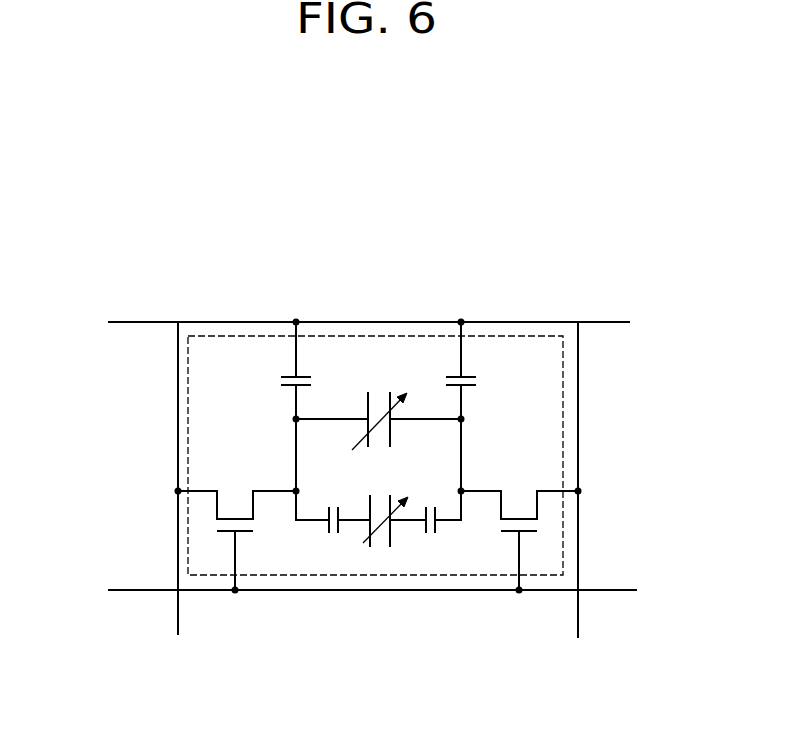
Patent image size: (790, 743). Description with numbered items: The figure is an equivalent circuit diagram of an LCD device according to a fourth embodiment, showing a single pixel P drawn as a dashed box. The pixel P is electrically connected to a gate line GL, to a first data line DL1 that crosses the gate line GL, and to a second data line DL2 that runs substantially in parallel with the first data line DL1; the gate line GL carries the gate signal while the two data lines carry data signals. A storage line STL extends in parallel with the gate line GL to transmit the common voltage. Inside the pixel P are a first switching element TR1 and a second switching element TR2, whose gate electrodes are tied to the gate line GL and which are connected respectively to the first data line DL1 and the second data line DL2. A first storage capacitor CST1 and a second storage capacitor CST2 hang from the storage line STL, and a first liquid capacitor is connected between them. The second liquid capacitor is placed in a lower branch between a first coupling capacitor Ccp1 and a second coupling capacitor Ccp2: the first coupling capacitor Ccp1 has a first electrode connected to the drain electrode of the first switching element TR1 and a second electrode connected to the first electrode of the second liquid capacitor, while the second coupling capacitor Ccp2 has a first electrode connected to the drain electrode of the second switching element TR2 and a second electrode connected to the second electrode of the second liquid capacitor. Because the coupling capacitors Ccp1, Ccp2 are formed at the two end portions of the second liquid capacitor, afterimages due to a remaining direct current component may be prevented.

The pixel P is at (375, 333).
The storage line STL is at (135, 323).
The gate line GL is at (134, 592).
The first data line DL1 is at (178, 438).
The second data line DL2 is at (583, 441).
The first storage capacitor CST1 is at (263, 370).
The second storage capacitor CST2 is at (491, 370).
The first coupling capacitor Ccp1 is at (334, 535).
The second coupling capacitor Ccp2 is at (431, 535).
The first switching element TR1 is at (237, 526).
The second switching element TR2 is at (519, 527).